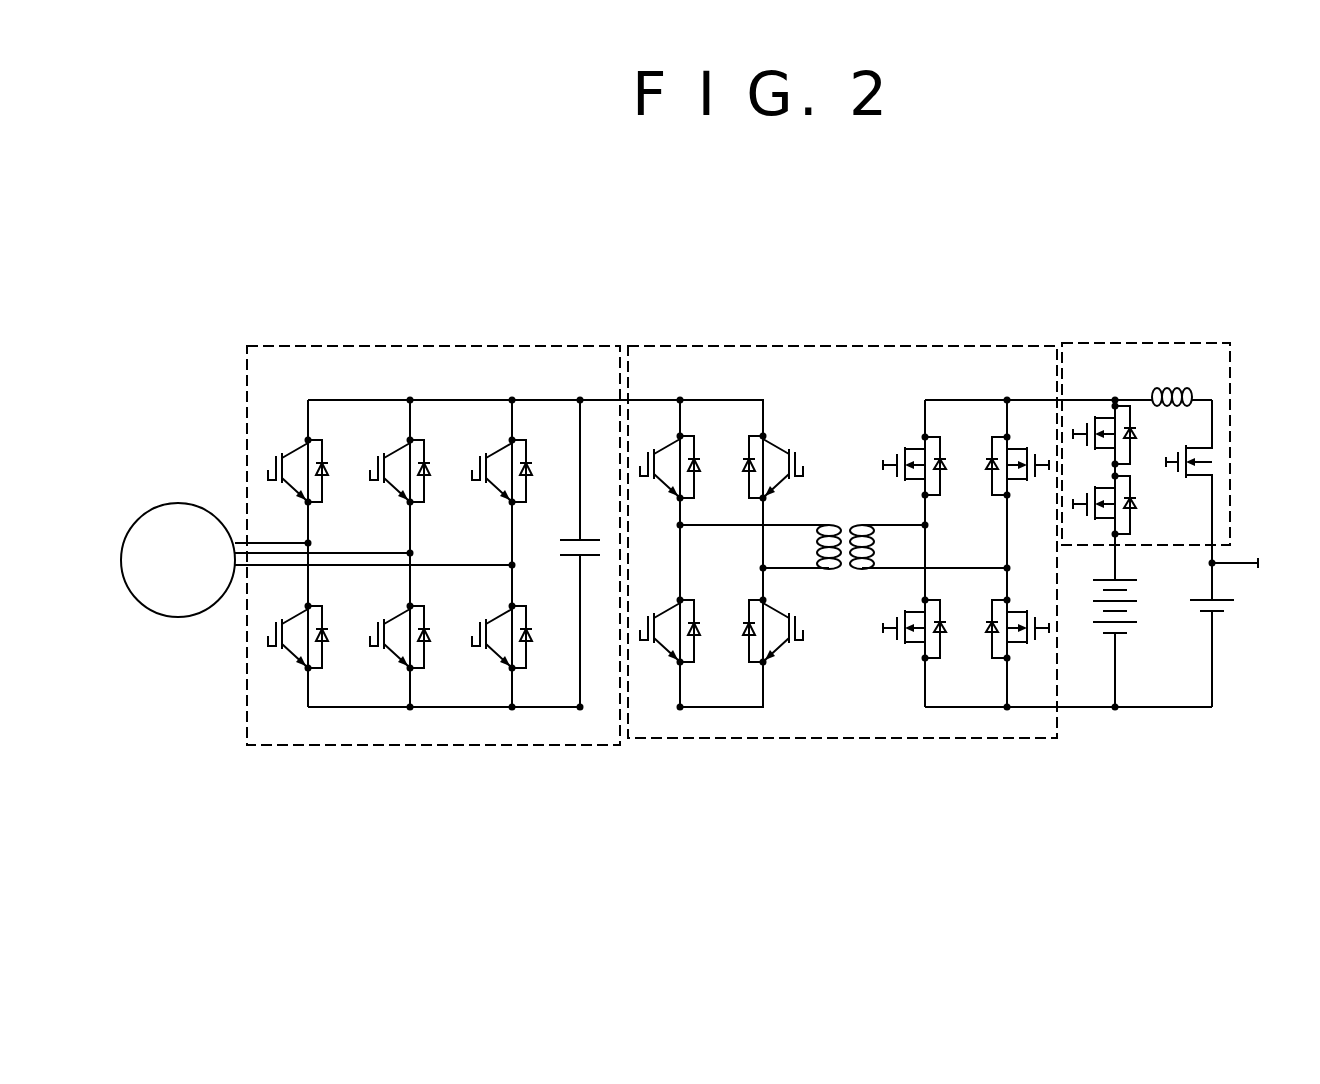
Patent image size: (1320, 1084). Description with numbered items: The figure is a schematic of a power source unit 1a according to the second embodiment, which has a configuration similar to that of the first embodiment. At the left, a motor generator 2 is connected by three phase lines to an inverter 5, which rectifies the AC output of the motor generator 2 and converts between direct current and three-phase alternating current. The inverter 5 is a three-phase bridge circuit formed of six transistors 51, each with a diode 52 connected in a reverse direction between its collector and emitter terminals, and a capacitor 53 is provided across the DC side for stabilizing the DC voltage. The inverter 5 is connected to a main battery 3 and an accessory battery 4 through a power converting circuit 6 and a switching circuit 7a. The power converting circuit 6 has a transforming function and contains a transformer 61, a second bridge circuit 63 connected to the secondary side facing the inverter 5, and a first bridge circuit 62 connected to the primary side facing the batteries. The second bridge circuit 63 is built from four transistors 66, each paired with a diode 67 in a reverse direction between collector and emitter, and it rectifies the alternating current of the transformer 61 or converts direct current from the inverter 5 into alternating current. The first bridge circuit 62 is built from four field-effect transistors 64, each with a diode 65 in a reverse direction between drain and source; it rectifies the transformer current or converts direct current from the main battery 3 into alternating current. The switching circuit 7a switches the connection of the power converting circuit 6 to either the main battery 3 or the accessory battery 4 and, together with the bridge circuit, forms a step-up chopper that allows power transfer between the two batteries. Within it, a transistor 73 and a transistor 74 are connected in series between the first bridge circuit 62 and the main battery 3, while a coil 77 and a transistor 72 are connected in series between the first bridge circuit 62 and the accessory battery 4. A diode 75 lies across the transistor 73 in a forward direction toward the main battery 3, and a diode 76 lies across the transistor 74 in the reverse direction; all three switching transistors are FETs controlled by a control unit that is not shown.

The power source unit 1a is at (1102, 246).
The motor generator 2 is at (178, 502).
The main battery 3 is at (1135, 610).
The accessory battery 4 is at (1228, 610).
The inverter 5 is at (562, 346).
The power converting circuit 6 is at (843, 346).
The switching circuit 7a is at (1190, 343).
The transistor 51 is at (283, 493).
The diode 52 is at (321, 442).
The capacitor 53 is at (577, 558).
The transformer 61 is at (860, 523).
The first bridge circuit 62 is at (963, 400).
The second bridge circuit 63 is at (726, 400).
The transistor 64 is at (903, 448).
The diode 65 is at (942, 444).
The transistor 66 is at (648, 452).
The diode 67 is at (697, 442).
The transistor 72 is at (1188, 480).
The transistor 73 is at (1092, 410).
The transistor 74 is at (1087, 535).
The diode 75 is at (1127, 406).
The diode 76 is at (1138, 535).
The coil 77 is at (1172, 406).